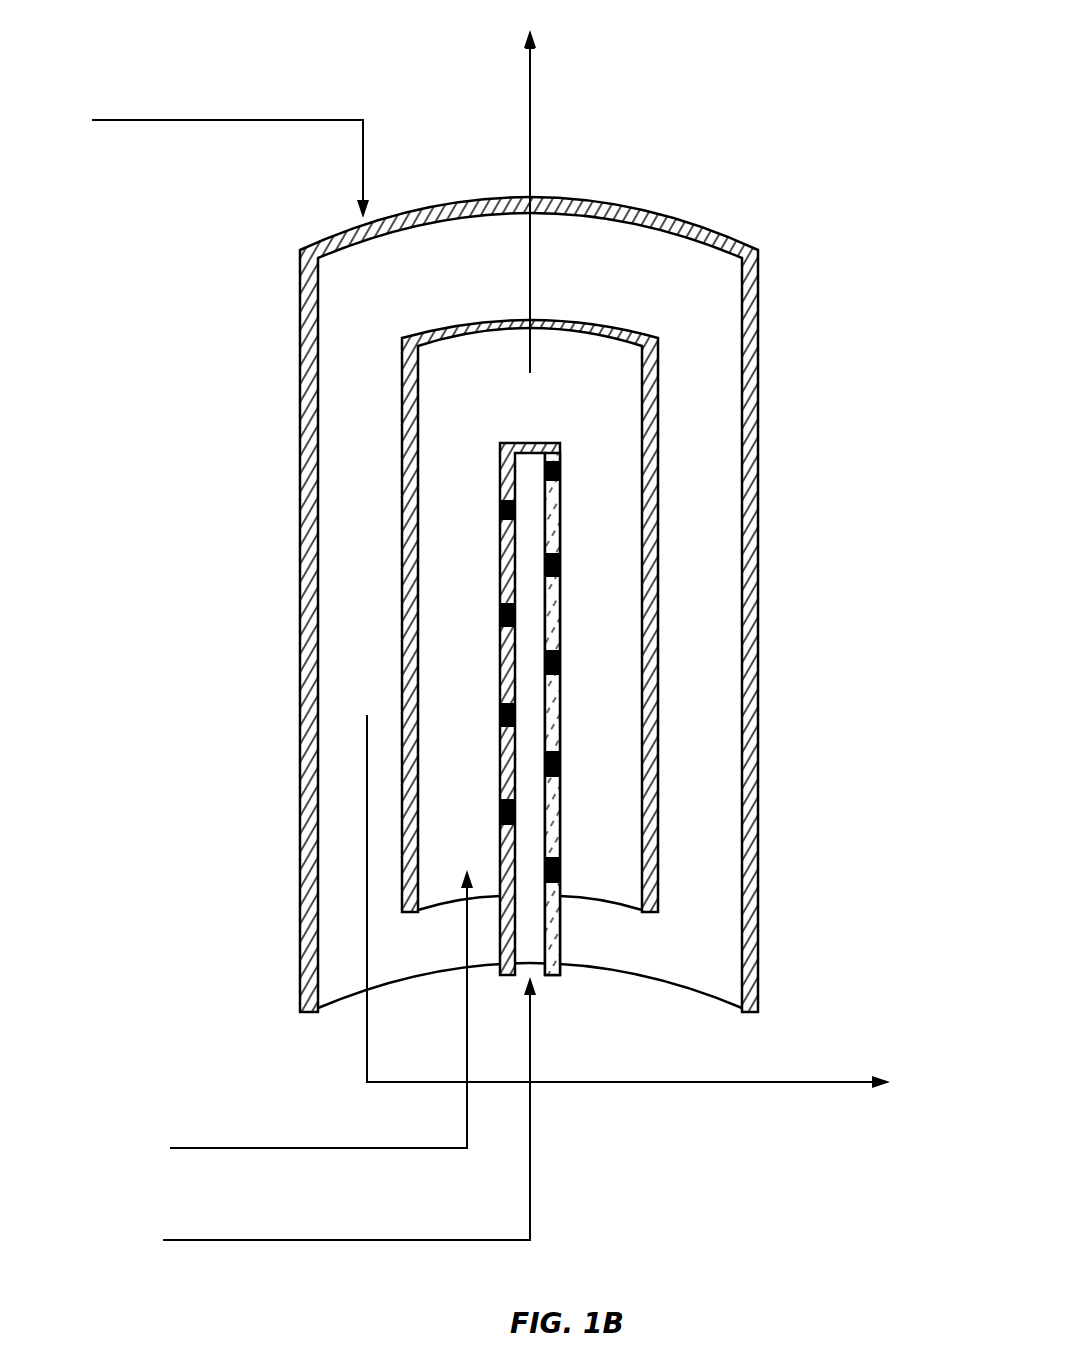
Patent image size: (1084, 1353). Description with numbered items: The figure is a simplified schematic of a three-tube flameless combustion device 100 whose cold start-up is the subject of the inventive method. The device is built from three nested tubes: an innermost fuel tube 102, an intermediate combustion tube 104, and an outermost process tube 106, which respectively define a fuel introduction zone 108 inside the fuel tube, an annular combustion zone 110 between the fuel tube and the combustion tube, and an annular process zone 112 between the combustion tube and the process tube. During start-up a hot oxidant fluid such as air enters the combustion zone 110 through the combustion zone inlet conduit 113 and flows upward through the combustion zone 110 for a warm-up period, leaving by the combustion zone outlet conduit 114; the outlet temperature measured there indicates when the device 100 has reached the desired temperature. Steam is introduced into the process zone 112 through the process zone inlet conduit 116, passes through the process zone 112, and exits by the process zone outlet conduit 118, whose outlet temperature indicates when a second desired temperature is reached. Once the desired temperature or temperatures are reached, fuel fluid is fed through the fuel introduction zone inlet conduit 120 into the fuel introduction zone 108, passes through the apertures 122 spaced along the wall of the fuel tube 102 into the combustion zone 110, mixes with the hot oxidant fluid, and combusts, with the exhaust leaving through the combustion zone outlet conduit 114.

The three-tube flameless combustion device 100 is at (750, 92).
The fuel tube 102 is at (560, 714).
The combustion tube 104 is at (658, 663).
The process tube 106 is at (758, 583).
The fuel introduction zone 108 is at (530, 541).
The combustion zone 110 is at (486, 591).
The process zone 112 is at (384, 618).
The combustion zone inlet conduit 113 is at (337, 1148).
The combustion zone outlet conduit 114 is at (532, 138).
The process zone inlet conduit 116 is at (250, 120).
The process zone outlet conduit 118 is at (773, 1082).
The fuel introduction zone inlet conduit 120 is at (339, 1240).
The apertures 122 is at (500, 512).